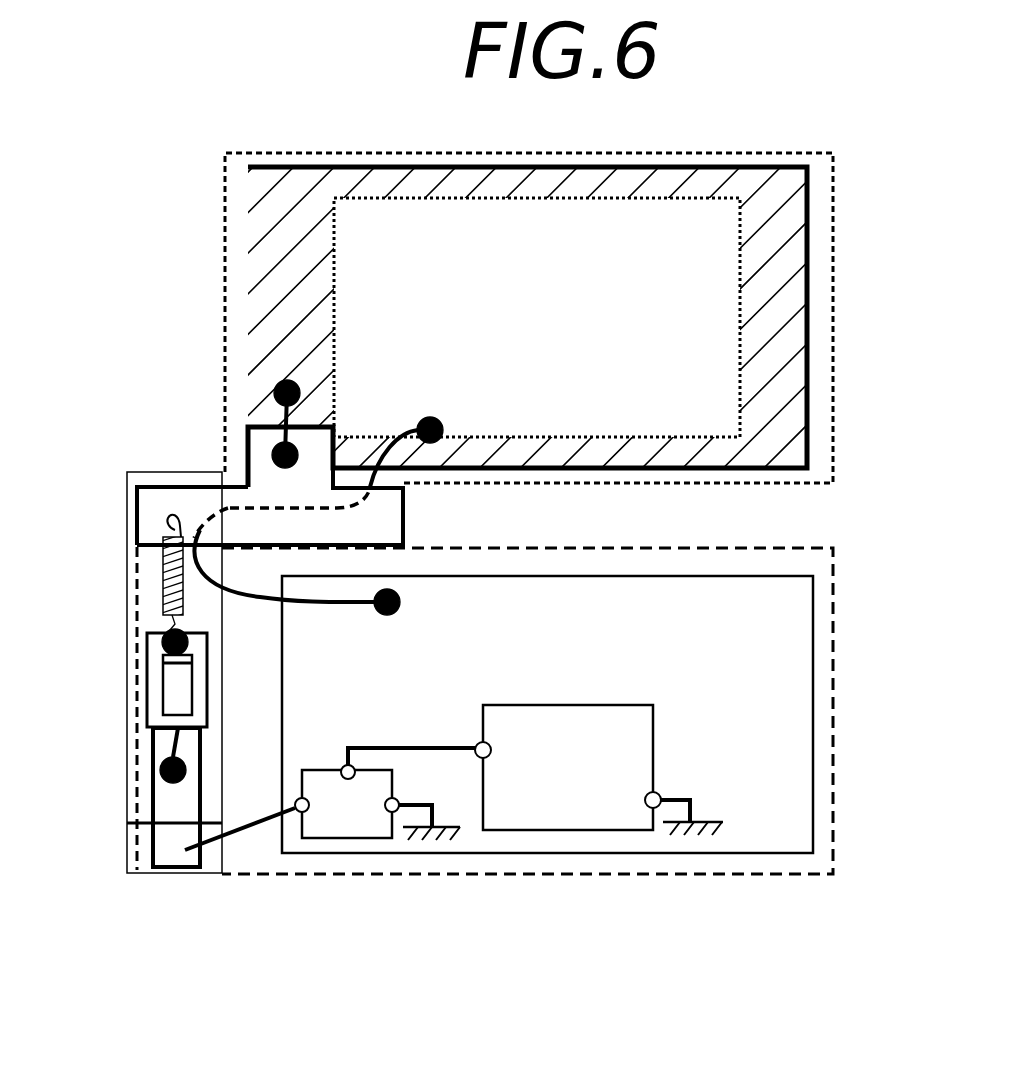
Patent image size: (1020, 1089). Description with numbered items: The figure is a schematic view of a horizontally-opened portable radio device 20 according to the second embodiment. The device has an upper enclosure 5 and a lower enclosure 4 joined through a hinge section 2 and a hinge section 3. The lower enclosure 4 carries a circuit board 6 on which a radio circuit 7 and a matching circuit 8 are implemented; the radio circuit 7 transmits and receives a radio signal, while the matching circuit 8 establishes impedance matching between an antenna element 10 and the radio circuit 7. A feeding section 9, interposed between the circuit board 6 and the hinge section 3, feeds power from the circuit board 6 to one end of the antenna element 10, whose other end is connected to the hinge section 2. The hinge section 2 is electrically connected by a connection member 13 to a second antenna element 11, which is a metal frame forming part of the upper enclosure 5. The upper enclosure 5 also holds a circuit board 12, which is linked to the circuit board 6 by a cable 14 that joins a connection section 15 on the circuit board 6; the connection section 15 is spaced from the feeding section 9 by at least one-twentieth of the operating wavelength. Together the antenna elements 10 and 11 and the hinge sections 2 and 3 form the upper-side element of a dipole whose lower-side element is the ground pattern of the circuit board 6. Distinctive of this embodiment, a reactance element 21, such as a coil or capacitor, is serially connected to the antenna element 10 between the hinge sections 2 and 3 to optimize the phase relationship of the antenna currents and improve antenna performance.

The hinge section 2 is at (180, 507).
The hinge section 3 is at (172, 800).
The lower enclosure 4 is at (837, 578).
The upper enclosure 5 is at (818, 280).
The circuit board 6 is at (813, 757).
The radio circuit 7 is at (573, 813).
The matching circuit 8 is at (352, 820).
The feeding section 9 is at (237, 830).
The antenna element 10 is at (165, 592).
The antenna element 11 is at (277, 215).
The circuit board 12 is at (775, 385).
The connection member 13 is at (278, 413).
The cable 14 is at (362, 592).
The connection section 15 is at (400, 604).
The portable radio device 20 is at (764, 142).
The reactance element 21 is at (178, 692).